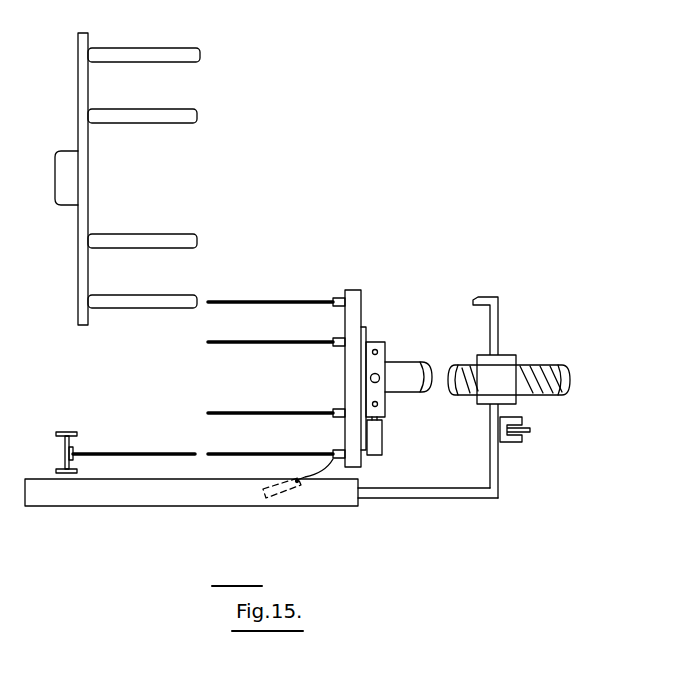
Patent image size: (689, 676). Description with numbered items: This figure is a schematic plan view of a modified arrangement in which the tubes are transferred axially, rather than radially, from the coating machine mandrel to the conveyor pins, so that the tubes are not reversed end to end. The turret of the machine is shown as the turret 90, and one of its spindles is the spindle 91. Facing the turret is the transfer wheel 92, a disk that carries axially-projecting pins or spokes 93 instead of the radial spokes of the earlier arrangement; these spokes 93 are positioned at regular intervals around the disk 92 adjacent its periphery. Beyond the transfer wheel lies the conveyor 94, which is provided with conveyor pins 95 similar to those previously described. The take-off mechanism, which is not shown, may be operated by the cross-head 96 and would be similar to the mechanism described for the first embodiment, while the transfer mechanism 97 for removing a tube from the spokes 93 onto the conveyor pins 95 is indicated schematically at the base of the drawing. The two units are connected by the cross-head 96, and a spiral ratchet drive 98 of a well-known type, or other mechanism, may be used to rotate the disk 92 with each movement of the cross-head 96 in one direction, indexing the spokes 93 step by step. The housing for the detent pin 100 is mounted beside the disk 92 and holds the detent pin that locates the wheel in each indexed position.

The turret 90 is at (78, 222).
The spindle 91 is at (169, 294).
The transfer wheel 92 is at (352, 312).
The axially-projecting pins or spokes 93 is at (266, 302).
The conveyor 94 is at (66, 432).
The conveyor pins 95 is at (128, 452).
The cross-head 96 is at (499, 332).
The transfer mechanism 97 is at (185, 490).
The spiral ratchet drive 98 is at (516, 357).
The housing for the detent pin 100 is at (376, 445).